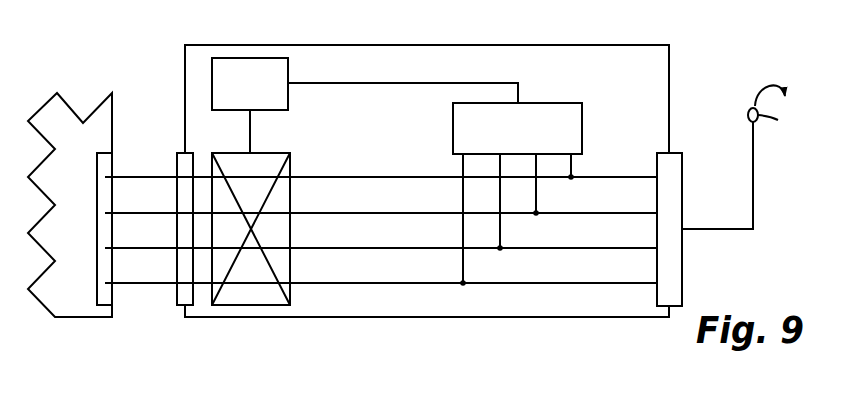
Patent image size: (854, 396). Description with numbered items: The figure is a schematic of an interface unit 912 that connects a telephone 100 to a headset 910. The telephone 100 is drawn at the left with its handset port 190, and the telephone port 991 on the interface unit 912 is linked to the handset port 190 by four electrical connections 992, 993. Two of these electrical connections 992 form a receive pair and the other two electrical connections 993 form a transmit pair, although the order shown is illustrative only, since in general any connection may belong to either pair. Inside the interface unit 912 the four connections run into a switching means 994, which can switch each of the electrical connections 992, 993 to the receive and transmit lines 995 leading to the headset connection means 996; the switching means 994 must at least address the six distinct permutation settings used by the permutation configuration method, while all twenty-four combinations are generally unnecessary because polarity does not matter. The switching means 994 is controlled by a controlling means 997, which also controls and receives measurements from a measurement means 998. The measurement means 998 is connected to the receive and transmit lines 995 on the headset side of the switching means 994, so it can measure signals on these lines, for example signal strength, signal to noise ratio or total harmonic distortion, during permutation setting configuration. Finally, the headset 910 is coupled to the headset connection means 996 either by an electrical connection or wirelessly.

The telephone 100 is at (63, 328).
The handset port 190 is at (105, 297).
The headset 910 is at (789, 133).
The interface unit 912 is at (581, 328).
The telephone port 991 is at (185, 163).
The electrical connections (receive pair) 992 is at (133, 213).
The electrical connections (transmit pair) 993 is at (133, 248).
The switching means 994 is at (253, 290).
The receive and transmit lines 995 is at (387, 248).
The headset connection means 996 is at (668, 230).
The controlling means 997 is at (252, 83).
The measurement means 998 is at (518, 128).